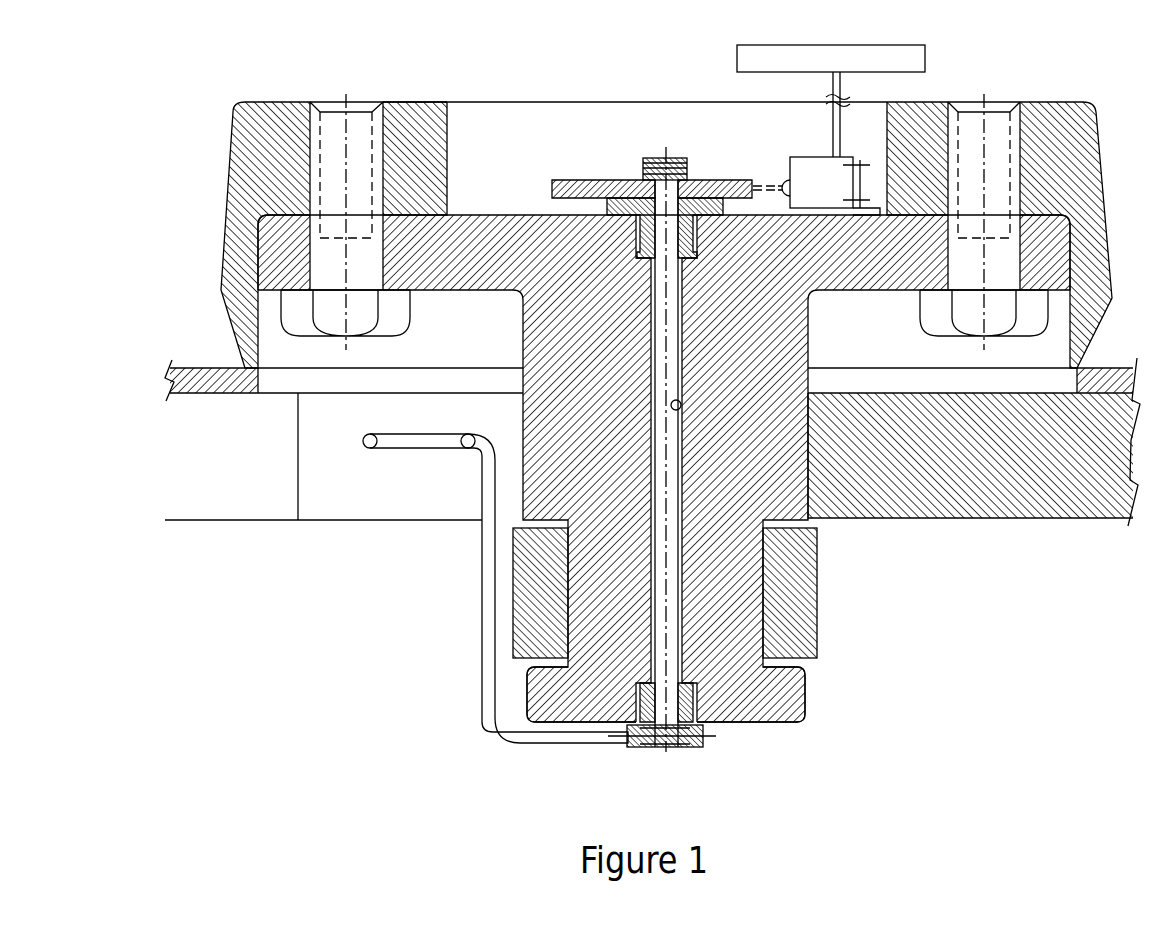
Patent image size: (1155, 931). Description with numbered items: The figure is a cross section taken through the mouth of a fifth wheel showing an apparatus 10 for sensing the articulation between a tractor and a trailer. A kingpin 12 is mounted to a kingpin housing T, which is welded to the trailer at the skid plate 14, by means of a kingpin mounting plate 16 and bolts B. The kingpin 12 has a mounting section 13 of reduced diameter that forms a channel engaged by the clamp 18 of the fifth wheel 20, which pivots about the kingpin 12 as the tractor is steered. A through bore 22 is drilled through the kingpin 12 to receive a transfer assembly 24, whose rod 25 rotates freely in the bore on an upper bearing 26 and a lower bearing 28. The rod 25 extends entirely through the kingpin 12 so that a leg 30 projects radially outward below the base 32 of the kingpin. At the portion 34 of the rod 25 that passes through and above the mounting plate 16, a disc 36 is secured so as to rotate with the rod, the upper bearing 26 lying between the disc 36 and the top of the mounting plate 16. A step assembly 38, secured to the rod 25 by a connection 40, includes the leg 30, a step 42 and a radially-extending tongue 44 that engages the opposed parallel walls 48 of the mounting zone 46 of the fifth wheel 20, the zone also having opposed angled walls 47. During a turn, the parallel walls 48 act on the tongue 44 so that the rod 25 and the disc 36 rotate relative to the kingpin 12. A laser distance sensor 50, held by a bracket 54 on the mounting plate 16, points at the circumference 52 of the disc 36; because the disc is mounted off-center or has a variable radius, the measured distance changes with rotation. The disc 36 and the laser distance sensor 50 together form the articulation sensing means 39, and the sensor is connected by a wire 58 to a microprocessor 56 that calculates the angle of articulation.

The apparatus 10 is at (296, 92).
The kingpin housing T is at (417, 102).
The kingpin 12 is at (775, 465).
The mounting section 13 is at (765, 582).
The skid plate 14 is at (1062, 383).
The kingpin mounting plate 16 is at (840, 289).
The clamp 18 is at (816, 633).
The fifth wheel 20 is at (1072, 520).
The through bore 22 is at (680, 402).
The transfer assembly 24 is at (718, 746).
The rod 25 is at (673, 310).
The upper bearing 26 is at (606, 206).
The lower bearing 28 is at (690, 705).
The leg 30 is at (586, 745).
The base 32 is at (769, 722).
The portion of the rod 34 is at (660, 196).
The disc 36 is at (578, 180).
The step assembly 38 is at (495, 607).
The articulation sensing means 39 is at (765, 173).
The connection 40 is at (690, 745).
The step 42 is at (490, 620).
The tongue 44 is at (445, 442).
The mounting zone 46 is at (260, 545).
The angled walls 47 is at (258, 447).
The parallel walls 48 is at (343, 478).
The laser distance sensor 50 is at (798, 164).
The circumference 52 is at (555, 185).
The bracket 54 is at (860, 160).
The microprocessor 56 is at (831, 58).
The wire 58 is at (833, 138).
The bolts B is at (388, 318).